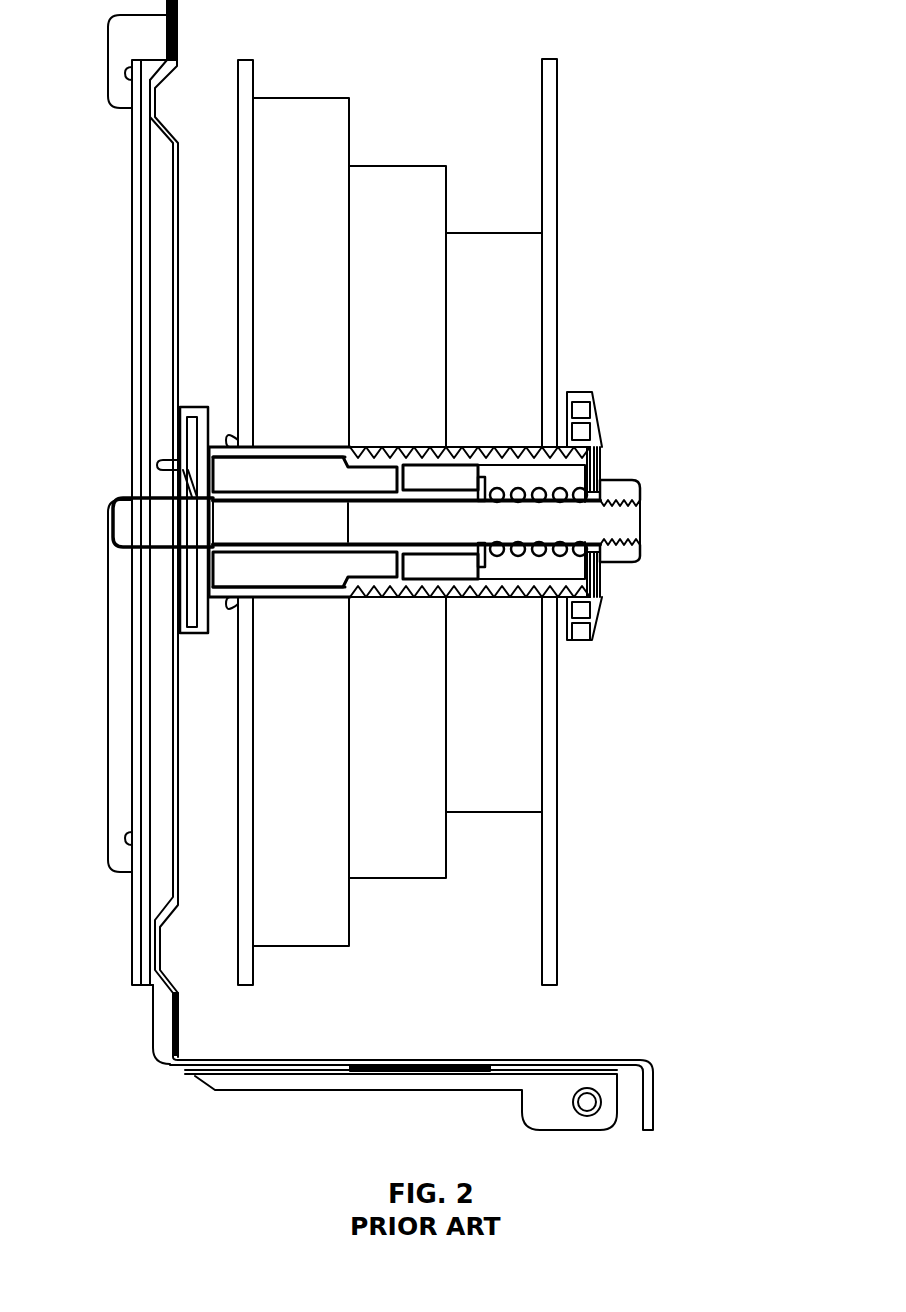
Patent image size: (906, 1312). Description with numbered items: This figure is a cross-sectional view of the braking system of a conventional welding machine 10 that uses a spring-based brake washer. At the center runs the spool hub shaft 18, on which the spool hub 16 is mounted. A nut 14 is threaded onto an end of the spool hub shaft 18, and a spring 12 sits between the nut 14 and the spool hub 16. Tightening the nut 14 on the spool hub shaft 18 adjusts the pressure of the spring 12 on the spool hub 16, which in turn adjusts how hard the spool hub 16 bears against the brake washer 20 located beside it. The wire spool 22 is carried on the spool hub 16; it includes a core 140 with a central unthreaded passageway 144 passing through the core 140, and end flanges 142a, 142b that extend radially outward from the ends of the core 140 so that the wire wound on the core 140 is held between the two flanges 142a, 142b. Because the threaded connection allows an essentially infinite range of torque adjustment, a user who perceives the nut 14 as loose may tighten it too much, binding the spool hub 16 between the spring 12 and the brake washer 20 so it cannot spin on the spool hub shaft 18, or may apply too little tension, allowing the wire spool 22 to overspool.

The welding machine 10 is at (680, 170).
The spring 12 is at (513, 550).
The nut 14 is at (622, 482).
The spool hub 16 is at (468, 446).
The spool hub shaft 18 is at (305, 517).
The brake washer 20 is at (200, 600).
The wire spool 22 is at (313, 118).
The core 140 is at (390, 166).
The end flange 142a is at (254, 78).
The end flange 142b is at (558, 85).
The central unthreaded passageway 144 is at (393, 446).